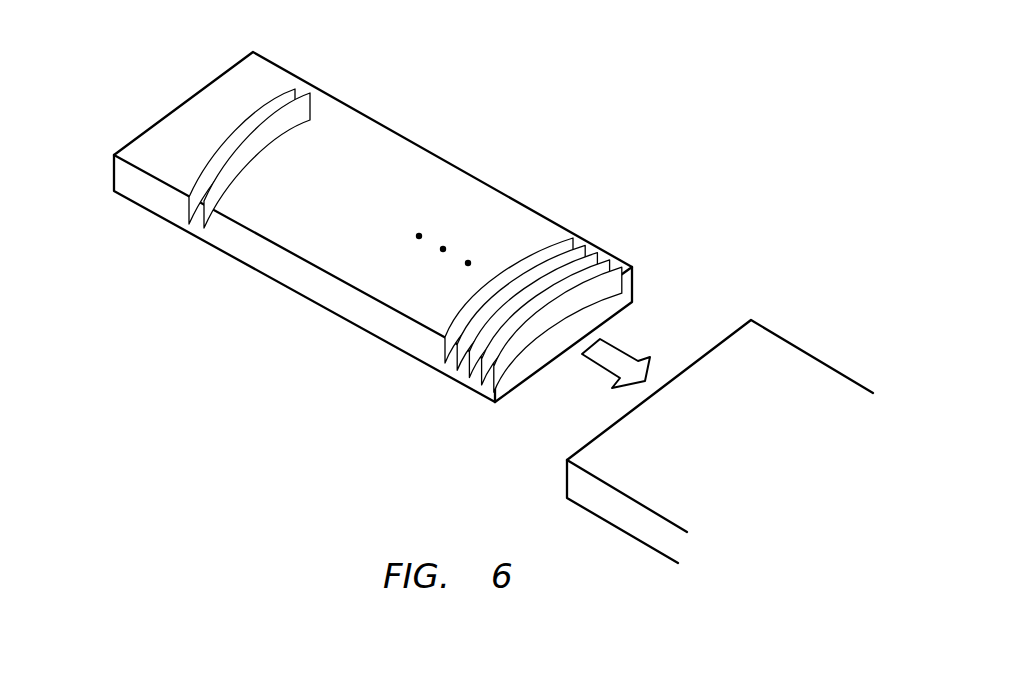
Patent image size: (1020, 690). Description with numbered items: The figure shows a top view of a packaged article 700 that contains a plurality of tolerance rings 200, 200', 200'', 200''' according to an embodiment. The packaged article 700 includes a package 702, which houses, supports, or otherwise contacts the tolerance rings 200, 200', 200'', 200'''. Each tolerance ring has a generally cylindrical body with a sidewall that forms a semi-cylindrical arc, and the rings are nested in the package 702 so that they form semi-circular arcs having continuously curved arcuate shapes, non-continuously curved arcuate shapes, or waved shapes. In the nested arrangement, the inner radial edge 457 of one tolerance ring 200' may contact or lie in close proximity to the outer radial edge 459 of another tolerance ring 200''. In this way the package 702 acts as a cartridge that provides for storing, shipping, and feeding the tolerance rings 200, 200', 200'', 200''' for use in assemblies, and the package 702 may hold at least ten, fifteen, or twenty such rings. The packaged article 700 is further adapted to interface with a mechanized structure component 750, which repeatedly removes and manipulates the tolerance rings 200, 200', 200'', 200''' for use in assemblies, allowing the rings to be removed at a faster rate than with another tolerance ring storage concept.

The packaged article 700 is at (666, 98).
The package 702 is at (420, 146).
The tolerance ring 200 is at (261, 123).
The inner radial edge 457 is at (513, 260).
The outer radial edge 459 is at (541, 258).
The tolerance ring 200' is at (564, 288).
The tolerance ring 200'' is at (581, 304).
The tolerance ring 200''' is at (603, 329).
The mechanized structure component 750 is at (795, 342).